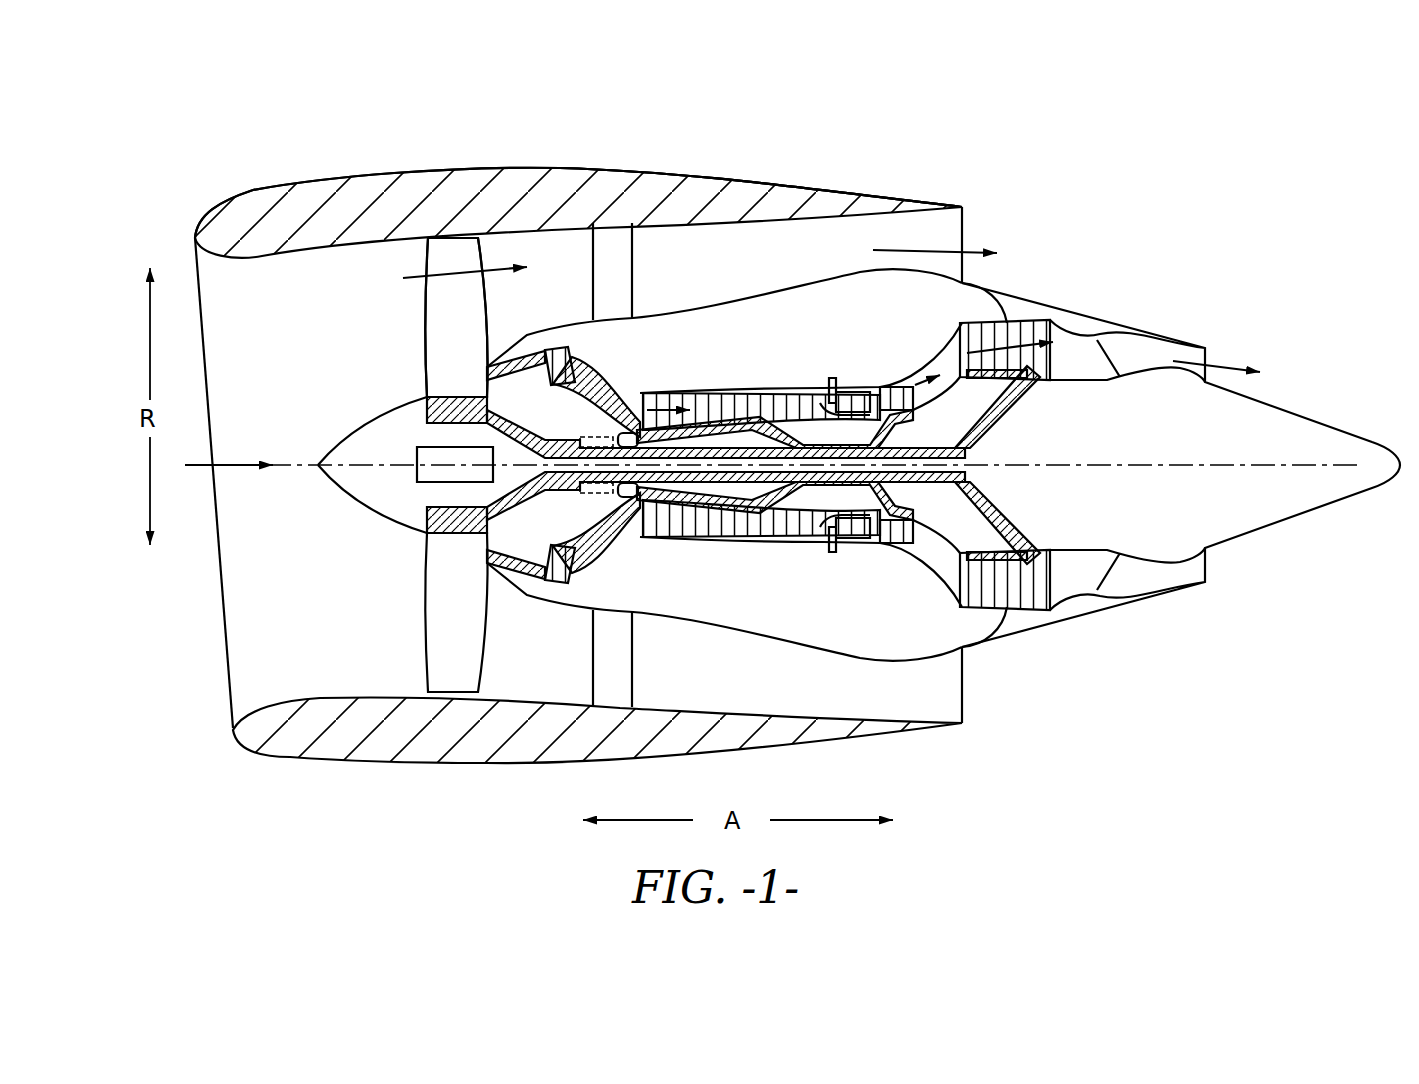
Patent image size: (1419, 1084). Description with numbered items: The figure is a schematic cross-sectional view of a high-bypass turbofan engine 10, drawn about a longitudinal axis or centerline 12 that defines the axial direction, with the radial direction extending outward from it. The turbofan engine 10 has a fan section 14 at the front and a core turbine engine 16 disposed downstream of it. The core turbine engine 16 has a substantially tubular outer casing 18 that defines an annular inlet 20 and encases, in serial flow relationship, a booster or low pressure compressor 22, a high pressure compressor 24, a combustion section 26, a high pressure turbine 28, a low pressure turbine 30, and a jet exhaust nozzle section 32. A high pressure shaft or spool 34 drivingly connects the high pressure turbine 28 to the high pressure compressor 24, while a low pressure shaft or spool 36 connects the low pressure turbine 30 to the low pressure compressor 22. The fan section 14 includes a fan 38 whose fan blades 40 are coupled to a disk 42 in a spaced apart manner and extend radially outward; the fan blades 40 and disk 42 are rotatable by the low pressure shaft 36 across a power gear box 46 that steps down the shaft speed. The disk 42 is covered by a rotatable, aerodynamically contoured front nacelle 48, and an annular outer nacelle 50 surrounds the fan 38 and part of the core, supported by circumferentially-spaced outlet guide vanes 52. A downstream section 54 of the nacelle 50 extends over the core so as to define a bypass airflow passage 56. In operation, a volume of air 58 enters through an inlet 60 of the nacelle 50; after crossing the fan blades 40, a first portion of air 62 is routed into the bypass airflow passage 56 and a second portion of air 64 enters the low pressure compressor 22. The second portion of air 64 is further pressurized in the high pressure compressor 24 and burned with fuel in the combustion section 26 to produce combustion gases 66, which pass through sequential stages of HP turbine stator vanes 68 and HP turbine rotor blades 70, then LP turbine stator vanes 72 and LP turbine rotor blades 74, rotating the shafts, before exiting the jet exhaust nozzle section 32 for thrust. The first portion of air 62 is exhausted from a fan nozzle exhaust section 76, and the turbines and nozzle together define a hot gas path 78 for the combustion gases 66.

The turbofan engine 10 is at (1195, 232).
The longitudinal axis or centerline 12 is at (1126, 462).
The fan section 14 is at (500, 150).
The core turbine engine 16 is at (793, 347).
The outer casing 18 is at (817, 650).
The annular inlet 20 is at (527, 587).
The booster or low pressure compressor 22 is at (590, 557).
The high pressure compressor 24 is at (663, 540).
The combustion section 26 is at (847, 540).
The high pressure turbine 28 is at (923, 533).
The low pressure turbine 30 is at (1053, 612).
The jet exhaust nozzle section 32 is at (1205, 353).
The high pressure shaft or spool 34 is at (878, 414).
The low pressure shaft or spool 36 is at (590, 443).
The fan 38 is at (410, 317).
The fan blades 40 is at (420, 642).
The disk 42 is at (427, 407).
The power gear box 46 is at (607, 437).
The front nacelle 48 is at (353, 437).
The outer nacelle 50 is at (487, 767).
The outlet guide vanes 52 is at (635, 245).
The downstream section of the nacelle 54 is at (783, 178).
The bypass airflow passage 56 is at (771, 264).
The volume of air 58 is at (226, 452).
The inlet 60 is at (227, 680).
The first portion of air 62 is at (437, 273).
The second portion of air 64 is at (507, 350).
The combustion gases 66 is at (915, 385).
The HP turbine stator vanes 68 is at (887, 550).
The HP turbine rotor blades 70 is at (897, 547).
The LP turbine stator vanes 72 is at (963, 590).
The LP turbine rotor blades 74 is at (977, 583).
The fan nozzle exhaust section 76 is at (963, 228).
The hot gas path 78 is at (953, 357).